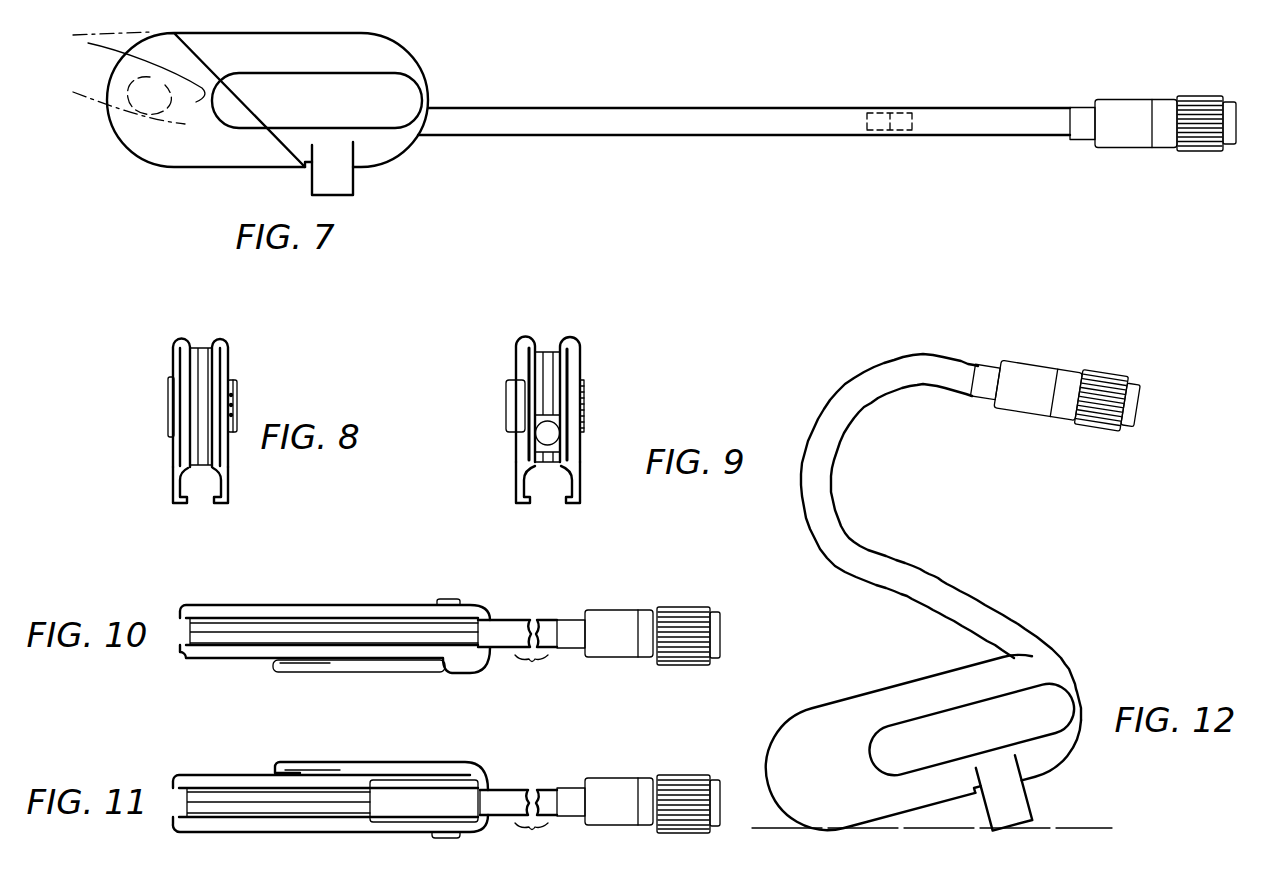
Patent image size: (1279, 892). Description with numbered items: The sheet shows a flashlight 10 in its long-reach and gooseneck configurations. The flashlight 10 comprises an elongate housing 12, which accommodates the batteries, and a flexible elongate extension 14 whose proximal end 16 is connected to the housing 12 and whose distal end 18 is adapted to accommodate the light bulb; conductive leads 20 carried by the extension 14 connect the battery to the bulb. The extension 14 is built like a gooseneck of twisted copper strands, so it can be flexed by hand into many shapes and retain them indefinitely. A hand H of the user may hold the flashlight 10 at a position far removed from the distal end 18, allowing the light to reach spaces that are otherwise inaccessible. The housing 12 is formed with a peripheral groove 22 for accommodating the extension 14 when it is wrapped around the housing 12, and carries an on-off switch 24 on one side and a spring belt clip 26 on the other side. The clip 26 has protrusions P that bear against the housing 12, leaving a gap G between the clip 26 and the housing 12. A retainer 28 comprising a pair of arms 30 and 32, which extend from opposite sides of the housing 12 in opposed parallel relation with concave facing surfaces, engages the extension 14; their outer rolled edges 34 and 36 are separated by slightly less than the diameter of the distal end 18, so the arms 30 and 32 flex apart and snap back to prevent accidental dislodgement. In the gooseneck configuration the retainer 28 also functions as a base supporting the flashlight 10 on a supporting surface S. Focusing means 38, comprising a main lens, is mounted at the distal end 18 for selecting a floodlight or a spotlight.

In FIG. 7, the flashlight 10 is at (275, 126).
In FIG. 8, the flashlight 10 is at (192, 420).
In FIG. 9, the flashlight 10 is at (548, 419).
In FIG. 10, the flashlight 10 is at (317, 636).
In FIG. 11, the flashlight 10 is at (333, 781).
In FIG. 12, the flashlight 10 is at (927, 748).
In FIG. 7, the housing 12 is at (405, 49).
In FIG. 7, the extension 14 is at (697, 107).
In FIG. 10, the extension 14 is at (552, 618).
In FIG. 11, the extension 14 is at (548, 787).
In FIG. 12, the extension 14 is at (993, 603).
In FIG. 7, the proximal end 16 is at (533, 106).
In FIG. 10, the proximal end 16 is at (502, 613).
In FIG. 11, the proximal end 16 is at (500, 783).
In FIG. 12, the proximal end 16 is at (1099, 709).
In FIG. 7, the distal end 18 is at (1153, 95).
In FIG. 10, the distal end 18 is at (688, 606).
In FIG. 11, the distal end 18 is at (688, 775).
In FIG. 12, the distal end 18 is at (1091, 364).
In FIG. 7, the conductive leads 20 is at (898, 111).
In FIG. 8, the peripheral groove 22 is at (201, 348).
In FIG. 9, the peripheral groove 22 is at (553, 352).
In FIG. 10, the peripheral groove 22 is at (188, 626).
In FIG. 11, the peripheral groove 22 is at (185, 796).
In FIG. 8, the on-off switch 24 is at (169, 405).
In FIG. 9, the on-off switch 24 is at (584, 409).
In FIG. 10, the on-off switch 24 is at (450, 600).
In FIG. 11, the on-off switch 24 is at (461, 837).
In FIG. 7, the belt clip 26 is at (405, 75).
In FIG. 8, the belt clip 26 is at (238, 405).
In FIG. 9, the belt clip 26 is at (506, 404).
In FIG. 10, the belt clip 26 is at (408, 673).
In FIG. 11, the belt clip 26 is at (353, 761).
In FIG. 7, the retainer 28 is at (311, 172).
In FIG. 8, the retainer 28 is at (170, 480).
In FIG. 9, the retainer 28 is at (514, 469).
In FIG. 8, the arm 30 is at (168, 491).
In FIG. 9, the arm 30 is at (581, 491).
In FIG. 7, the arm 32 is at (341, 187).
In FIG. 8, the arm 32 is at (226, 489).
In FIG. 9, the arm 32 is at (517, 491).
In FIG. 8, the outer rolled edge 34 is at (187, 499).
In FIG. 9, the outer rolled edge 34 is at (566, 500).
In FIG. 8, the outer rolled edge 36 is at (214, 497).
In FIG. 9, the outer rolled edge 36 is at (532, 498).
In FIG. 7, the focusing means 38 is at (1201, 95).
In FIG. 7, the hand H is at (92, 86).
In FIG. 8, the protrusions P is at (232, 437).
In FIG. 10, the protrusions P is at (268, 662).
In FIG. 11, the protrusions P is at (277, 771).
In FIG. 10, the gap G is at (343, 663).
In FIG. 11, the gap G is at (313, 766).
In FIG. 12, the supporting surface S is at (1077, 828).